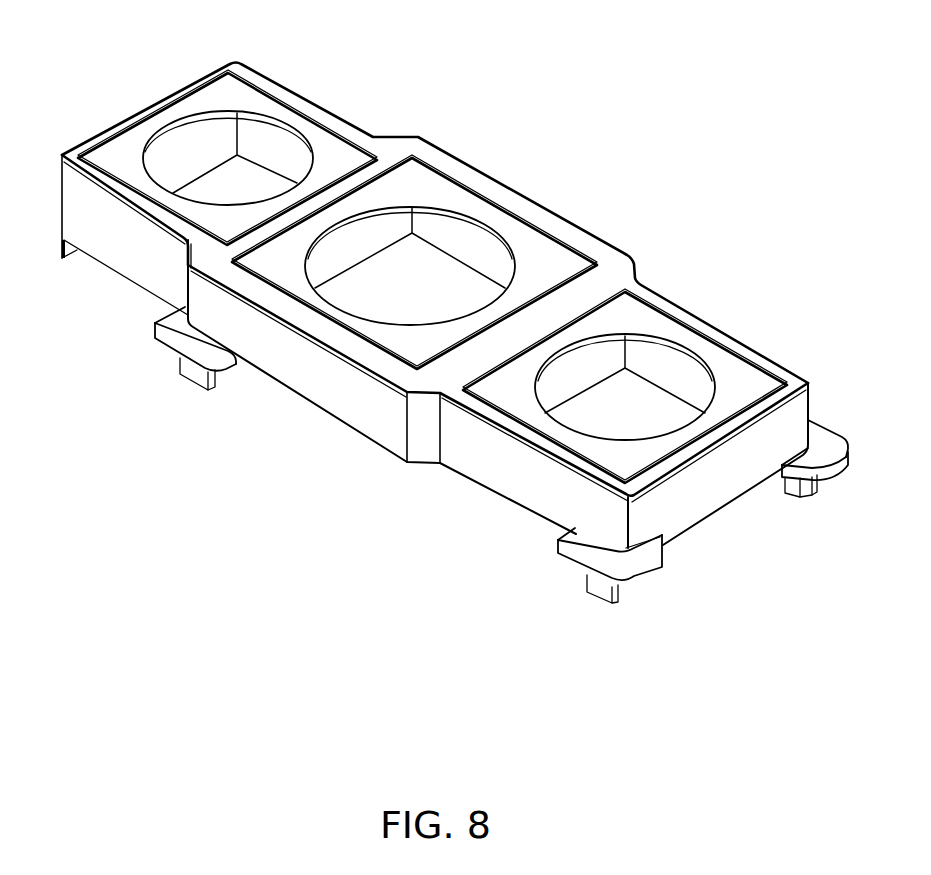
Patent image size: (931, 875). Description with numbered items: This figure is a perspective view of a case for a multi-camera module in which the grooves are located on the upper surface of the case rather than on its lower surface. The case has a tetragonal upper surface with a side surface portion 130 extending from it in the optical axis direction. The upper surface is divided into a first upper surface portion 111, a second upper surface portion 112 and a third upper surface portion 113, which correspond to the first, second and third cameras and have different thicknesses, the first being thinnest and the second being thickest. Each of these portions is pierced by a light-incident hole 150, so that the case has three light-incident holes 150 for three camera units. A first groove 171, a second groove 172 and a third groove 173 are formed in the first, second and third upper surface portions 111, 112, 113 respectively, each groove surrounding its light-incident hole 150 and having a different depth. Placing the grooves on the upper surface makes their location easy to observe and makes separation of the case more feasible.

The first upper surface portion 111 is at (537, 257).
The second upper surface portion 112 is at (730, 373).
The third upper surface portion 113 is at (331, 157).
The side surface portion 130 is at (339, 427).
The light-incident hole 150 is at (222, 192).
The first groove 171 is at (445, 176).
The second groove 172 is at (640, 300).
The third groove 173 is at (247, 83).